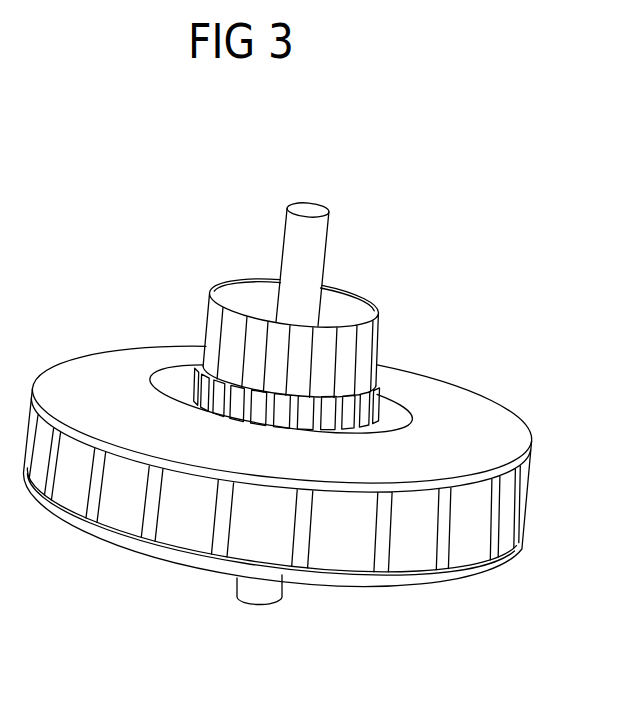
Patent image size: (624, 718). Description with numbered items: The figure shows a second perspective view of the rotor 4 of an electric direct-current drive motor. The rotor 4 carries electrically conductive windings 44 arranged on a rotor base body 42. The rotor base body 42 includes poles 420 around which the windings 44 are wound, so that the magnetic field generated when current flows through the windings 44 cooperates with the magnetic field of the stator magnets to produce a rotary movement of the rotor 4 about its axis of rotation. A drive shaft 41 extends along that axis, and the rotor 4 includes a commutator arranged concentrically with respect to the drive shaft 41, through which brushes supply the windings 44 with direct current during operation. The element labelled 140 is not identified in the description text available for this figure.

The rotor 4 is at (549, 441).
The drive shaft 41 is at (313, 255).
The hub cylinder 140 is at (358, 347).
The windings 44 is at (95, 382).
The rotor base body 42 is at (354, 558).
The poles 420 is at (247, 533).